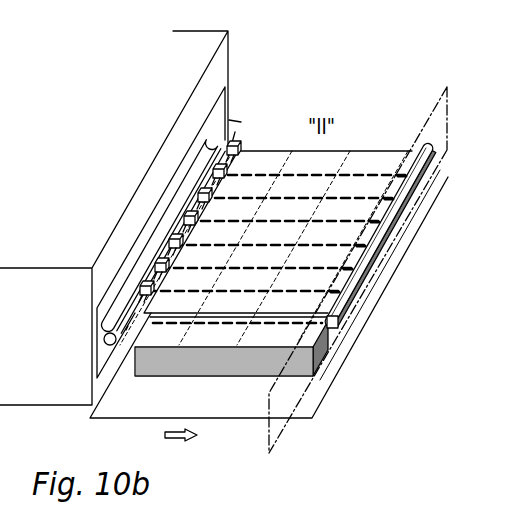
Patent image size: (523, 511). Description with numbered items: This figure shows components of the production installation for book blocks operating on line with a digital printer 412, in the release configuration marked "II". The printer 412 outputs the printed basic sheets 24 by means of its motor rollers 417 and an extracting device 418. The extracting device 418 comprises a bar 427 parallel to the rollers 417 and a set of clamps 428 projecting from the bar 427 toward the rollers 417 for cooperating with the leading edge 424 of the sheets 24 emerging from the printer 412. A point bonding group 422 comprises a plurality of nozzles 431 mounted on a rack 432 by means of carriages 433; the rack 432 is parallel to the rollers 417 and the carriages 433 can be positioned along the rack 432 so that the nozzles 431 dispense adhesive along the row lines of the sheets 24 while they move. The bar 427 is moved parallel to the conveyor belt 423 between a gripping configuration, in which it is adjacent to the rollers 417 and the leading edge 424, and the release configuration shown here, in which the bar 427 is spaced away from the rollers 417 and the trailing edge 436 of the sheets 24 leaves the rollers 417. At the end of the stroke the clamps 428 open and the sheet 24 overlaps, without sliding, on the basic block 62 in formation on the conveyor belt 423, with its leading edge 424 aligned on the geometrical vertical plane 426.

The digital printer 412 is at (238, 48).
The point bonding group 422 is at (237, 128).
The clamps 428 is at (412, 133).
The geometrical vertical plane 426 is at (448, 108).
The extracting device 418 is at (453, 159).
The conveyor belt 423 is at (447, 178).
The bar 427 is at (400, 244).
The basic block 62 is at (339, 336).
The leading edge 424 is at (321, 338).
The basic sheets 24 is at (236, 340).
The trailing edge 436 is at (125, 332).
The motor rollers 417 is at (104, 338).
The nozzles 431 is at (152, 283).
The rack 432 is at (180, 222).
The carriages 433 is at (216, 152).